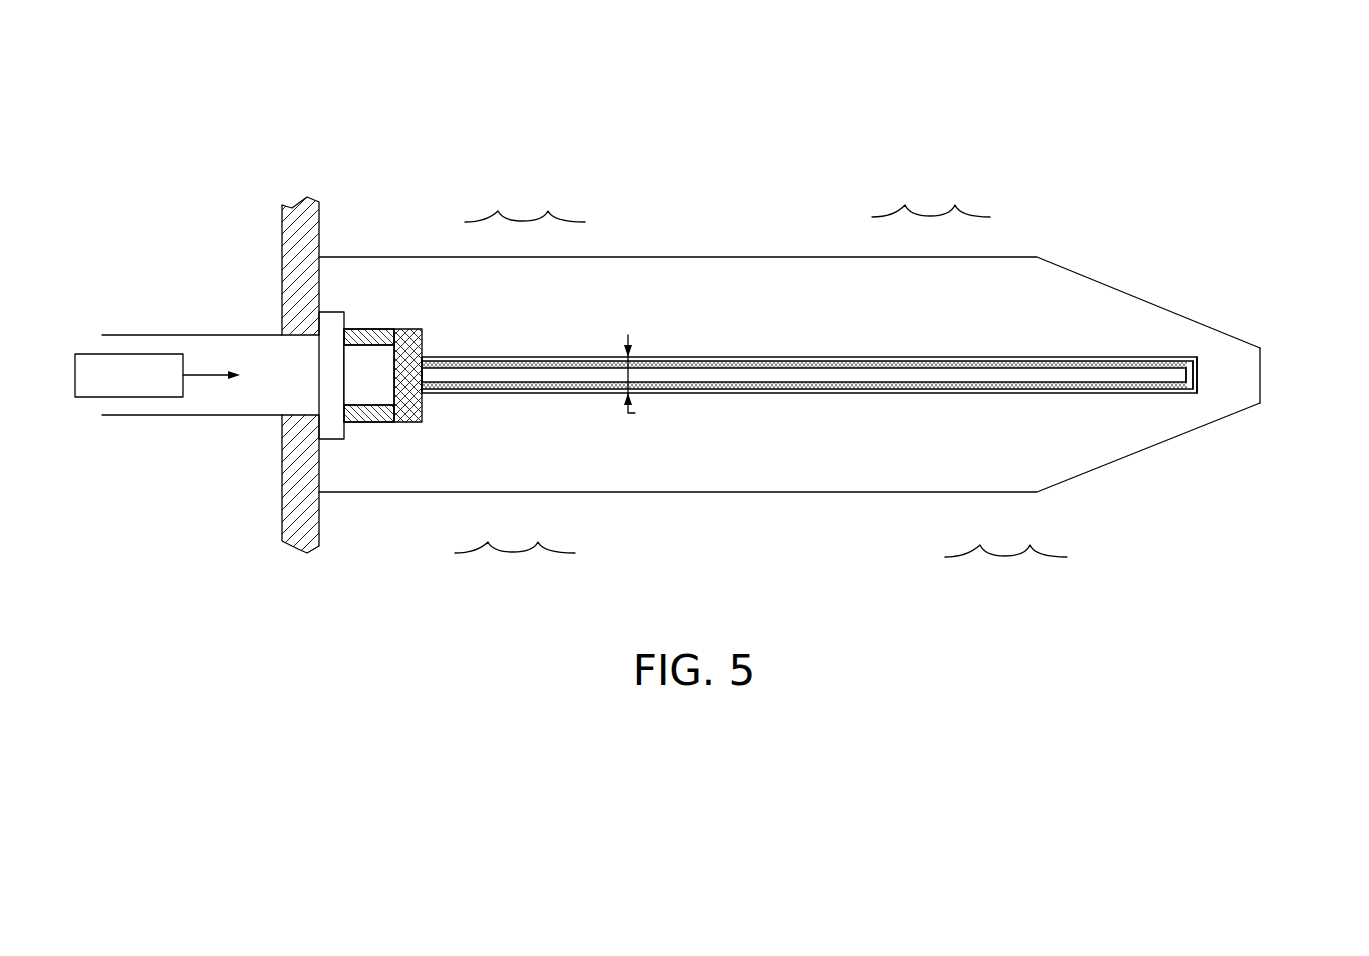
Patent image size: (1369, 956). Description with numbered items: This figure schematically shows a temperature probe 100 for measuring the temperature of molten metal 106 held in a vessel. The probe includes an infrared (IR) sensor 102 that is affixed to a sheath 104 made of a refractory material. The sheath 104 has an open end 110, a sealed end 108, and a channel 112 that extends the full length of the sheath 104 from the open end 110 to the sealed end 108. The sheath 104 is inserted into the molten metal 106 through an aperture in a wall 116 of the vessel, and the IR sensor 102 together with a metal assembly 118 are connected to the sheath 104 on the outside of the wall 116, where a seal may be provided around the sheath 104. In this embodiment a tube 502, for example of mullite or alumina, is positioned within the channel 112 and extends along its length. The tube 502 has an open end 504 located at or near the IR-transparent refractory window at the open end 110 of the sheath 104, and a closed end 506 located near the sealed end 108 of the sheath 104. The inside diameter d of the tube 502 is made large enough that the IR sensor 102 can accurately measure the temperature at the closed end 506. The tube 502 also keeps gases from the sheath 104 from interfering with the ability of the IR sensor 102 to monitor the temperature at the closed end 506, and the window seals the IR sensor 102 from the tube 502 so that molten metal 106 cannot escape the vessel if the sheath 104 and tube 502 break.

The temperature probe 100 is at (246, 168).
The infrared (IR) sensor 102 is at (157, 375).
The sheath 104 is at (746, 257).
The molten metal 106 is at (512, 553).
The sealed end 108 is at (1260, 375).
The open end 110 is at (343, 257).
The channel 112 is at (1187, 397).
The wall 116 is at (282, 483).
The metal assembly 118 is at (187, 335).
The tube 502 is at (783, 375).
The open end 504 is at (447, 389).
The closed end 506 is at (1188, 373).
The inside diameter d is at (634, 381).